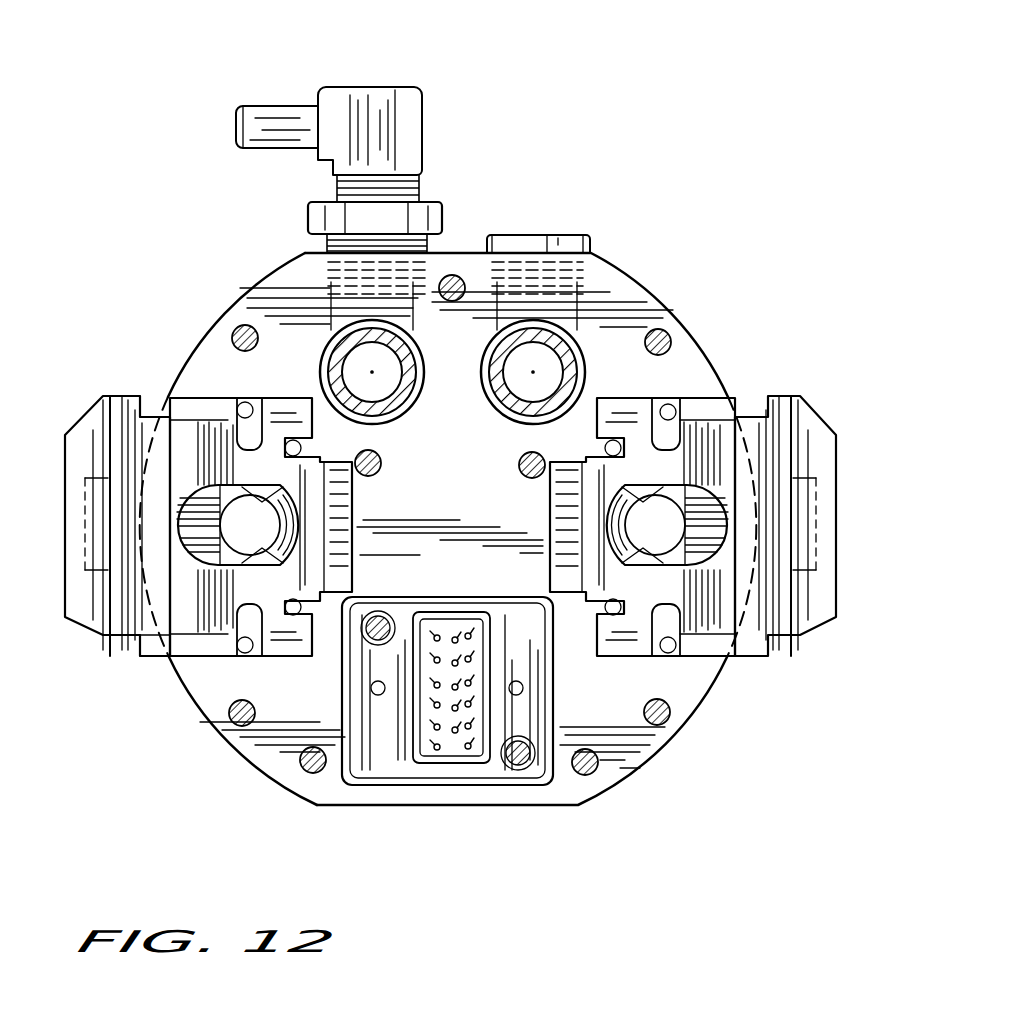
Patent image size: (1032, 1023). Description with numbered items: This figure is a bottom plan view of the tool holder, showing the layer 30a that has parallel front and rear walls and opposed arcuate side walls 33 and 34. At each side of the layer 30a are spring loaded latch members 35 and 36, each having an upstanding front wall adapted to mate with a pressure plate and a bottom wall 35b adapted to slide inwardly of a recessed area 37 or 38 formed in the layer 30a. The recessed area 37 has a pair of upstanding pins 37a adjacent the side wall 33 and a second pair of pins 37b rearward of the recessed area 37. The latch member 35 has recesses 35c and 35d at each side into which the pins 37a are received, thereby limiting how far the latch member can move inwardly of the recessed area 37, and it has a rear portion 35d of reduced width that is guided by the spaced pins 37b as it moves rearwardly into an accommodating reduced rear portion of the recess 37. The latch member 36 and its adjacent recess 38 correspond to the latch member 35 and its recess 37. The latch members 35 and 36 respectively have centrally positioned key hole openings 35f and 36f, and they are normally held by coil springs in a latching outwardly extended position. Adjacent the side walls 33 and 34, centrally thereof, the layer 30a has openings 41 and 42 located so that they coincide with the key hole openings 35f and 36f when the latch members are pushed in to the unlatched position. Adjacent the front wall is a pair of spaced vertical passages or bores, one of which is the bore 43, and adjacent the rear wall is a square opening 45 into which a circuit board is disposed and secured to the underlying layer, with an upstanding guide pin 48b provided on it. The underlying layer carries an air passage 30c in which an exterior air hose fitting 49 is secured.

The exterior air hose fitting 49 is at (273, 106).
The layer 30a is at (642, 308).
The air passage 30c is at (417, 298).
The arcuate side wall 33 is at (693, 348).
The arcuate side wall 34 is at (270, 778).
The latch member 35 is at (63, 452).
The latch member 36 is at (838, 495).
The bottom wall 35b is at (243, 657).
The recess 35c is at (163, 410).
The recess 35d is at (150, 650).
The key hole opening 35f is at (193, 540).
The key hole opening 36f is at (720, 525).
The recessed area 37 is at (337, 575).
The recessed area 38 is at (563, 488).
The upstanding pins 37a is at (247, 402).
The pins 37b is at (303, 448).
The opening 41 is at (234, 548).
The opening 42 is at (668, 548).
The vertical passage or bore 43 is at (424, 355).
The square opening 45 is at (543, 780).
The guide pin 48b is at (377, 692).